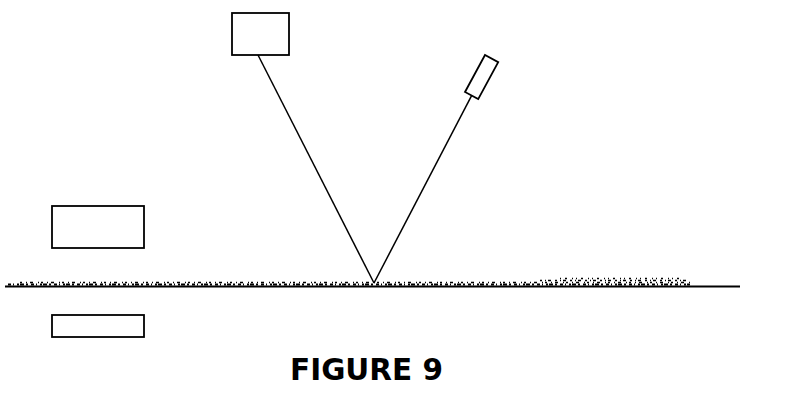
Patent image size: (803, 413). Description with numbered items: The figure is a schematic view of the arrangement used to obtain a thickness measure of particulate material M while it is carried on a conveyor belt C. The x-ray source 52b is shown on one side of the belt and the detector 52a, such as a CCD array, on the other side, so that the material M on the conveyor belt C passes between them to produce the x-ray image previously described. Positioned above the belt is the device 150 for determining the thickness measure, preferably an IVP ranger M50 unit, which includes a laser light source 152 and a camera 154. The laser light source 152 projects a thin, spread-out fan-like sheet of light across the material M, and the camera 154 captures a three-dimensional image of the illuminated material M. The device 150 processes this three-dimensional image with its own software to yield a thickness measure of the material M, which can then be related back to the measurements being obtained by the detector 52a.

The device for determining the thickness measure 150 is at (509, 153).
The laser light source 152 is at (477, 80).
The camera 154 is at (238, 42).
The detector 52a is at (113, 330).
The x-ray source 52b is at (73, 213).
The material m is at (305, 283).
The conveyor belt c is at (257, 288).